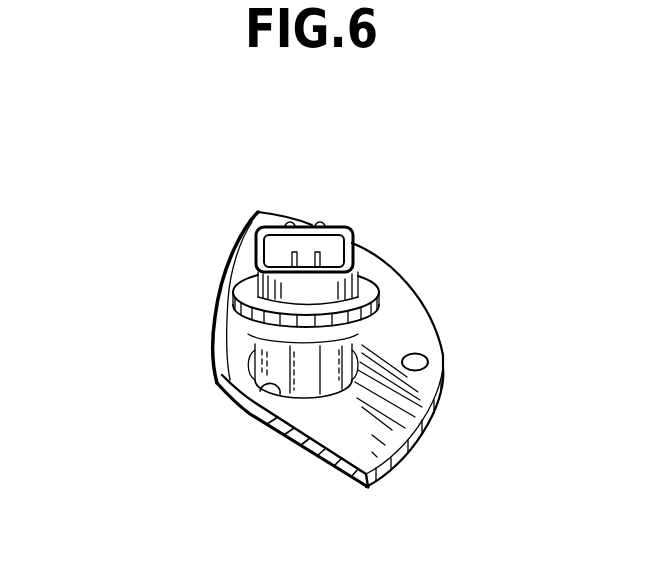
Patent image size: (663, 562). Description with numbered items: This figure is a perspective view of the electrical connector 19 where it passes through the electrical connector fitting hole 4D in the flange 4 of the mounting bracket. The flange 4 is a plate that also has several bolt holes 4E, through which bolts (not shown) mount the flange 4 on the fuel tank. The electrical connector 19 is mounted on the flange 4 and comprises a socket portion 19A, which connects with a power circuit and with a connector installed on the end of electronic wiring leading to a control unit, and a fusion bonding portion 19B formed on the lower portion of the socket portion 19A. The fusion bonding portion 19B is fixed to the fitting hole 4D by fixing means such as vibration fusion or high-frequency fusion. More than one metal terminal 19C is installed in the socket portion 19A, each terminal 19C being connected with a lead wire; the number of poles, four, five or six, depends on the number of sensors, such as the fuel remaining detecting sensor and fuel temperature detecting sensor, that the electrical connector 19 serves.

The flange 4 is at (410, 283).
The electrical connector fitting hole 4D is at (268, 384).
The bolt holes 4E is at (430, 362).
The electrical connector 19 is at (310, 384).
The socket portion 19A is at (262, 240).
The fusion bonding portion 19B is at (255, 320).
The terminal 19C is at (285, 249).